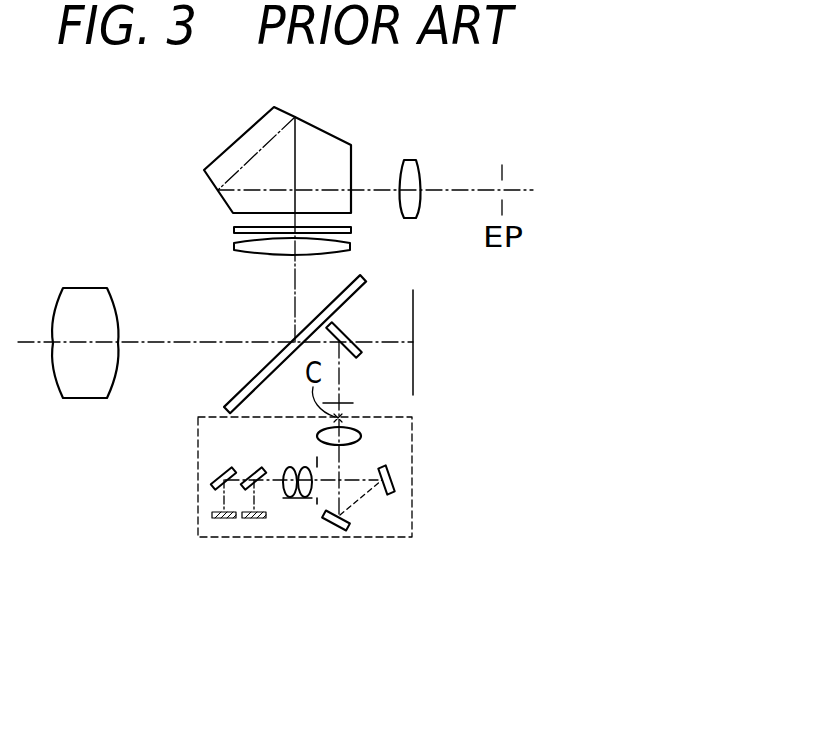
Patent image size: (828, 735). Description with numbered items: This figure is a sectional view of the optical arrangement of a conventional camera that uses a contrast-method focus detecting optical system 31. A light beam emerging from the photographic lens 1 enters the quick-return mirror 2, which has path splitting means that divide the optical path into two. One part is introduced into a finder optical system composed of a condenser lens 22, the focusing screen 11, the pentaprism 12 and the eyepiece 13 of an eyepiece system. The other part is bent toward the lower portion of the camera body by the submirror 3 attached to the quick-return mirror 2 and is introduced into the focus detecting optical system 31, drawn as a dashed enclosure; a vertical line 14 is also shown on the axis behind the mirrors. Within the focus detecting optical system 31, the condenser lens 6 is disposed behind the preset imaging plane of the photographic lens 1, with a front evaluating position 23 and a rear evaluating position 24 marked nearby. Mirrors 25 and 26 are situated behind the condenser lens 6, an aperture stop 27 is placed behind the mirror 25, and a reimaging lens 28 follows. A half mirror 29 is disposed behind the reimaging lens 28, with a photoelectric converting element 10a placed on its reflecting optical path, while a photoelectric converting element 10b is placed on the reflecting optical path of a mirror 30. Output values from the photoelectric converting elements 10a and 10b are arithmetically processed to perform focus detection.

The photographic lens 1 is at (85, 288).
The quick-return mirror 2 is at (367, 290).
The submirror 3 is at (342, 327).
The condenser lens 6 is at (351, 437).
The photoelectric converting element 10a is at (253, 518).
The photoelectric converting element 10b is at (215, 518).
The focusing screen 11 is at (234, 230).
The pentaprism 12 is at (323, 130).
The eyepiece 13 is at (408, 160).
The film plane 14 is at (413, 360).
The condenser lens 22 is at (234, 246).
The front evaluating position 23 is at (345, 403).
The rear evaluating position 24 is at (348, 426).
The mirror 25 is at (345, 529).
The mirror 26 is at (395, 480).
The aperture stop 27 is at (317, 502).
The reimaging lens 28 is at (298, 500).
The half mirror 29 is at (255, 474).
The mirror 30 is at (222, 476).
The focus detecting optical system 31 is at (390, 538).